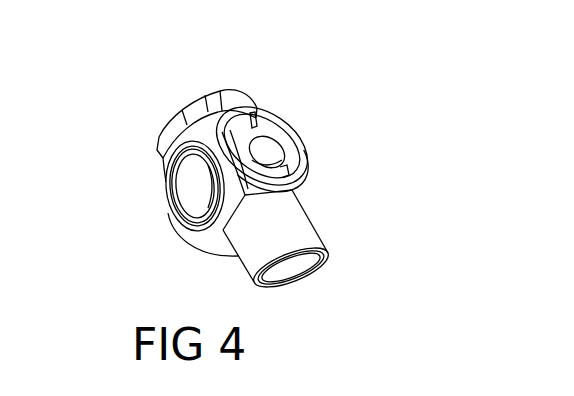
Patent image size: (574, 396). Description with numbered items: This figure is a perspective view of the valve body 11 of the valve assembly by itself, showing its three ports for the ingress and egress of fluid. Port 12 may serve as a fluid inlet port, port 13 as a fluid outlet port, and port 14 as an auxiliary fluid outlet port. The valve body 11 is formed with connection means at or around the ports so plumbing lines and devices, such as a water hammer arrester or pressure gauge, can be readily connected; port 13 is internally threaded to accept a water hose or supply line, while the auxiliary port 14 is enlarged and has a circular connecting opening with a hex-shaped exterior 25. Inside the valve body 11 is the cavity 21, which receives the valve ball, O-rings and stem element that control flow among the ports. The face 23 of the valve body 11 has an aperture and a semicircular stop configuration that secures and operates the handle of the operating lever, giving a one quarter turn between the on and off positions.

The valve body 11 is at (316, 130).
The port 12 is at (305, 275).
The port 13 is at (189, 190).
The auxiliary port 14 is at (174, 102).
The cavity 21 is at (207, 202).
The face 23 is at (250, 128).
The hex-shaped exterior 25 is at (232, 97).